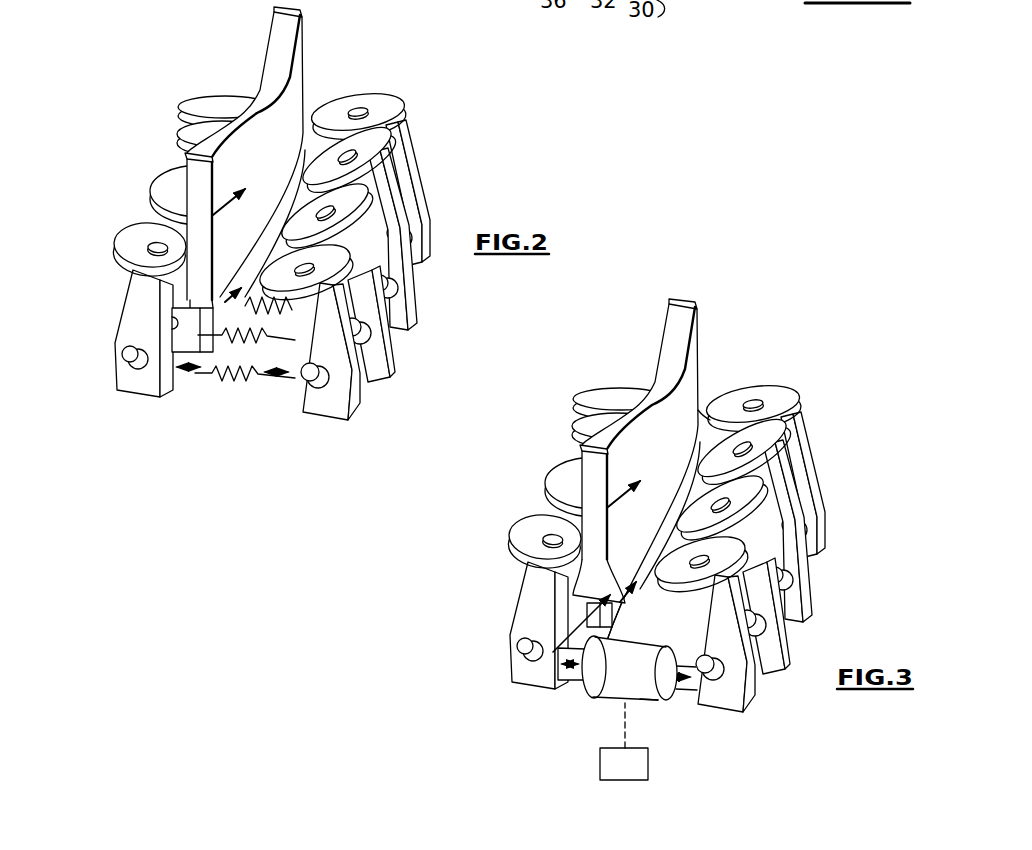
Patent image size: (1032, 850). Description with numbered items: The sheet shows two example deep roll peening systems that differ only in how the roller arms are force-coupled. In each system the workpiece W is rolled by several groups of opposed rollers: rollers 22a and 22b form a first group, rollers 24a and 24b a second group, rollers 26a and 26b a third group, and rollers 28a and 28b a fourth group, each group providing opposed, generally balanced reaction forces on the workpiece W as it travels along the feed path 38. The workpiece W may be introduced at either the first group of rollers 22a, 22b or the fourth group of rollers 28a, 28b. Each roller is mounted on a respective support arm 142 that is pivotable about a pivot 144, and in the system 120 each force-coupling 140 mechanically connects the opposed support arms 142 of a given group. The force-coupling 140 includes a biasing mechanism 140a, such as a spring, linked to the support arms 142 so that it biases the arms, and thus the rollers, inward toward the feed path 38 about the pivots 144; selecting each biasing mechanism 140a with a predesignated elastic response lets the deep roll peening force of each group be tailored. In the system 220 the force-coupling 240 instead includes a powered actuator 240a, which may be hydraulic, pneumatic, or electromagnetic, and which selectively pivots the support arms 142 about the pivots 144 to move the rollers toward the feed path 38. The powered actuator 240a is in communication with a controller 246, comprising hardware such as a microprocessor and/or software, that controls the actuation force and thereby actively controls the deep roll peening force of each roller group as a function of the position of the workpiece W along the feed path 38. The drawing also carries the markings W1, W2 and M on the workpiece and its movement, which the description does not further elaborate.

In FIG. 2, the workpiece W is at (300, 80).
In FIG. 3, the workpiece W is at (664, 497).
In FIG. 3, the first workpiece portion W1 is at (706, 402).
In FIG. 3, the second workpiece portion W2 is at (556, 668).
In FIG. 2, the direction of movement M is at (225, 215).
In FIG. 3, the direction of movement M is at (574, 527).
In FIG. 2, the roller 22a is at (352, 263).
In FIG. 3, the roller 22a is at (756, 564).
In FIG. 2, the roller 22b is at (114, 244).
In FIG. 3, the roller 22b is at (503, 542).
In FIG. 2, the roller 24a is at (370, 197).
In FIG. 3, the roller 24a is at (766, 508).
In FIG. 2, the roller 24b is at (150, 197).
In FIG. 3, the roller 24b is at (552, 487).
In FIG. 2, the roller 26a is at (390, 142).
In FIG. 3, the roller 26a is at (786, 452).
In FIG. 2, the roller 26b is at (177, 140).
In FIG. 3, the roller 26b is at (575, 430).
In FIG. 2, the roller 28a is at (405, 108).
In FIG. 3, the roller 28a is at (800, 408).
In FIG. 2, the roller 28b is at (177, 106).
In FIG. 3, the roller 28b is at (581, 391).
In FIG. 2, the feed path 38 is at (216, 385).
In FIG. 3, the feed path 38 is at (590, 579).
In FIG. 2, the deep roll peening system 120 is at (266, 234).
In FIG. 2, the force-coupling 140 is at (232, 349).
In FIG. 2, the biasing mechanism 140a is at (247, 383).
In FIG. 2, the support arm 142 is at (137, 328).
In FIG. 3, the support arm 142 is at (498, 625).
In FIG. 2, the pivot 144 is at (128, 362).
In FIG. 3, the pivot 144 is at (495, 663).
In FIG. 3, the deep roll peening system 220 is at (655, 543).
In FIG. 3, the force-coupling 240 is at (599, 705).
In FIG. 3, the powered actuator 240a is at (652, 702).
In FIG. 3, the controller 246 is at (649, 760).